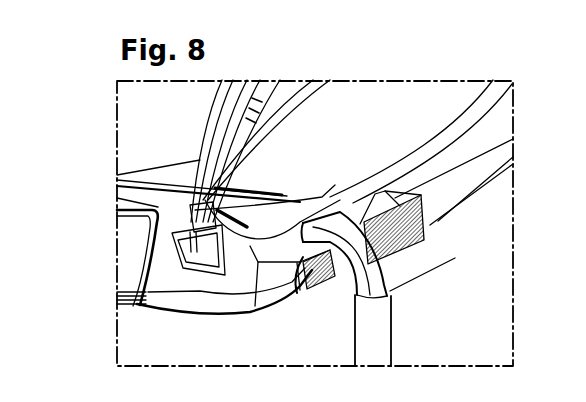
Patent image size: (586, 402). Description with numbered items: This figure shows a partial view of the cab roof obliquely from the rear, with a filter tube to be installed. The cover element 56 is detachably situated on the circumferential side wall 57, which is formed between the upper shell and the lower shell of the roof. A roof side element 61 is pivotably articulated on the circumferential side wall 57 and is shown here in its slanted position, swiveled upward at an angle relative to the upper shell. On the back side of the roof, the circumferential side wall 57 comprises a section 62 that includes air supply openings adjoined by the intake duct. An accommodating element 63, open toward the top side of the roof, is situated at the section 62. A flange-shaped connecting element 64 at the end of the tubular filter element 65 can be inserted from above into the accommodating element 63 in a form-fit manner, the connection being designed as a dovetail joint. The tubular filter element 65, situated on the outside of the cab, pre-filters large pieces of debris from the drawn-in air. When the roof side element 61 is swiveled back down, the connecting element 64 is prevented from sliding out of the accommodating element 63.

The cover element 56 is at (137, 263).
The circumferential side wall 57 is at (137, 307).
The roof side element 61 is at (212, 138).
The section 62 is at (470, 160).
The accommodating element 63 is at (380, 277).
The connecting element 64 is at (347, 203).
The tubular filter element 65 is at (391, 320).